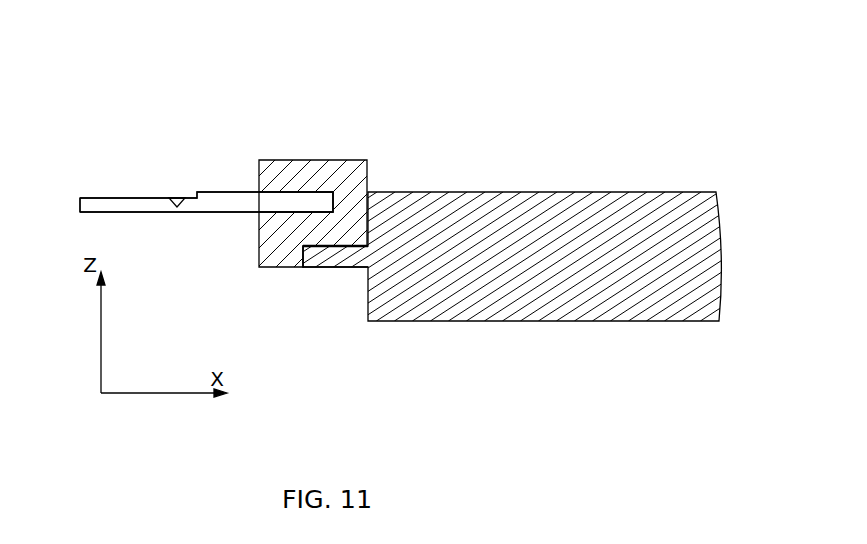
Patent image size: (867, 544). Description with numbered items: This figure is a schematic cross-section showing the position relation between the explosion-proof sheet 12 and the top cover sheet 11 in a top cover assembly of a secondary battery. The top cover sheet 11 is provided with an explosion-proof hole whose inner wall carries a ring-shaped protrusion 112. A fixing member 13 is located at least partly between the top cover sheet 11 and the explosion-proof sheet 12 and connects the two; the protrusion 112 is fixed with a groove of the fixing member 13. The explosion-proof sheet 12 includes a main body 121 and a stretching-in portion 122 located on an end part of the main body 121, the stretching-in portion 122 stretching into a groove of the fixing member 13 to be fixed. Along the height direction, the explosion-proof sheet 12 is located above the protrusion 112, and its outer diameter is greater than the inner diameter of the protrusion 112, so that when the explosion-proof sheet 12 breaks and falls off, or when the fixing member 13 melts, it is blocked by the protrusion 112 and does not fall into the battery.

The top cover sheet 11 is at (499, 186).
The protrusion 112 is at (331, 258).
The explosion-proof sheet 12 is at (275, 71).
The main body 121 is at (137, 205).
The stretching-in portion 122 is at (280, 203).
The fixing member 13 is at (338, 173).